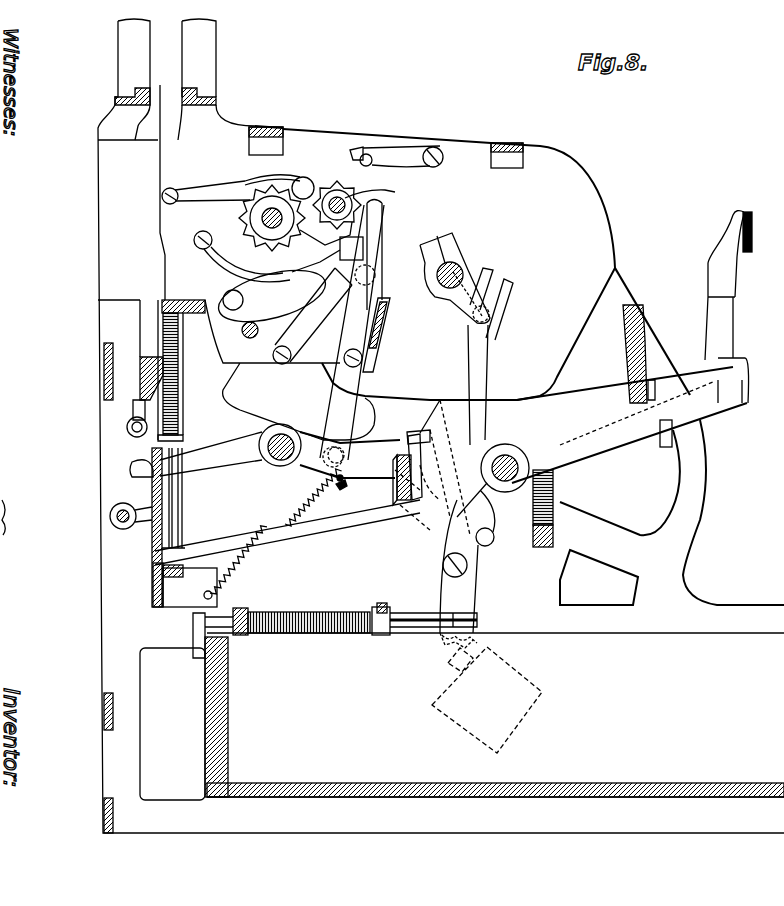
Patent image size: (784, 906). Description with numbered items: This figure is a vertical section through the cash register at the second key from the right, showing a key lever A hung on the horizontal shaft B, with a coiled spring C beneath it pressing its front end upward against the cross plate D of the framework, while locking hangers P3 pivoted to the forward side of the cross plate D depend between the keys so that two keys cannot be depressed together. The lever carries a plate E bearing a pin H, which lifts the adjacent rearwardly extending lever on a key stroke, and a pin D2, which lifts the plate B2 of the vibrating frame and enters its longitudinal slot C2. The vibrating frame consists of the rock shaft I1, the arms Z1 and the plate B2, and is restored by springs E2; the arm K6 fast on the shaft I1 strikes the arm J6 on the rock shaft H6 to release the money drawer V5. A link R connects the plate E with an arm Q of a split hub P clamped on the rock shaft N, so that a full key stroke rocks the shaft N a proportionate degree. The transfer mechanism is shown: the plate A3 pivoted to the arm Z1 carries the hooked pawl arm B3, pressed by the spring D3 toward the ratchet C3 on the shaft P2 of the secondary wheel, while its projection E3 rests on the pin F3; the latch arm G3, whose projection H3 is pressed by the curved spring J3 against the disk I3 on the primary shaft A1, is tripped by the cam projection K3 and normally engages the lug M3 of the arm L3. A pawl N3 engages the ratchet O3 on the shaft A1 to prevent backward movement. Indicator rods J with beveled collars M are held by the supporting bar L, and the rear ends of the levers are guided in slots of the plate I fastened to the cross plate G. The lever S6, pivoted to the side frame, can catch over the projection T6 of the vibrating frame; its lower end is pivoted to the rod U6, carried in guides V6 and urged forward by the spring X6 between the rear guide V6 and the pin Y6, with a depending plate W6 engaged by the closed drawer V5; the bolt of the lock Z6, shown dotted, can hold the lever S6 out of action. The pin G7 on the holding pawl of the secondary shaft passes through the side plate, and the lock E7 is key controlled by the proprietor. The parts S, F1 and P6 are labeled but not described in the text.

The pawl N3 is at (197, 204).
The shaft A1 is at (268, 208).
The disk I3 is at (272, 219).
The ratchet C3 is at (352, 198).
The ratchet O3 is at (230, 211).
The cam projection K3 is at (326, 235).
The latch arm G3 is at (235, 262).
The curved spring J3 is at (272, 296).
The projection H3 is at (265, 270).
The lug M3 is at (316, 266).
The arm L3 is at (312, 316).
The plate A3 is at (352, 334).
The pin F3 is at (341, 289).
The hooked pawl arm B3 is at (385, 250).
The projection E3 is at (346, 270).
The spring D3 is at (380, 342).
The shaft P2 is at (376, 187).
The pin G7 is at (357, 151).
The lock E7 is at (400, 150).
The split hub P is at (446, 238).
The rock shaft N is at (466, 270).
The arm Q is at (450, 300).
The pin S is at (490, 316).
The link R is at (484, 355).
The cross plate D is at (625, 365).
The locking hanger P3 is at (650, 375).
The key lever A is at (608, 445).
The shaft B is at (492, 478).
The coiled spring C is at (555, 497).
The pin H is at (497, 545).
The lever S6 is at (445, 548).
The pin D2 is at (445, 467).
The plate E is at (428, 422).
The longitudinal slot C2 is at (414, 436).
The projection T6 is at (405, 460).
The arm Z1 is at (350, 456).
The arm K6 is at (211, 454).
The rock shaft I1 is at (278, 462).
The spring F1 is at (275, 535).
The spring E2 is at (270, 575).
The plate B2 is at (395, 493).
The beveled collar M is at (186, 432).
The supporting bar L is at (140, 372).
The plate I is at (150, 482).
The rod J is at (184, 484).
The link P6 is at (148, 503).
The rock shaft H6 is at (110, 515).
The arm J6 is at (143, 522).
The cross plate G is at (153, 590).
The depending plate W6 is at (190, 638).
The spring X6 is at (288, 636).
The pin Y6 is at (366, 636).
The guide V6 is at (243, 607).
The rod U6 is at (415, 613).
The lock Z6 is at (517, 680).
The money drawer V5 is at (640, 690).